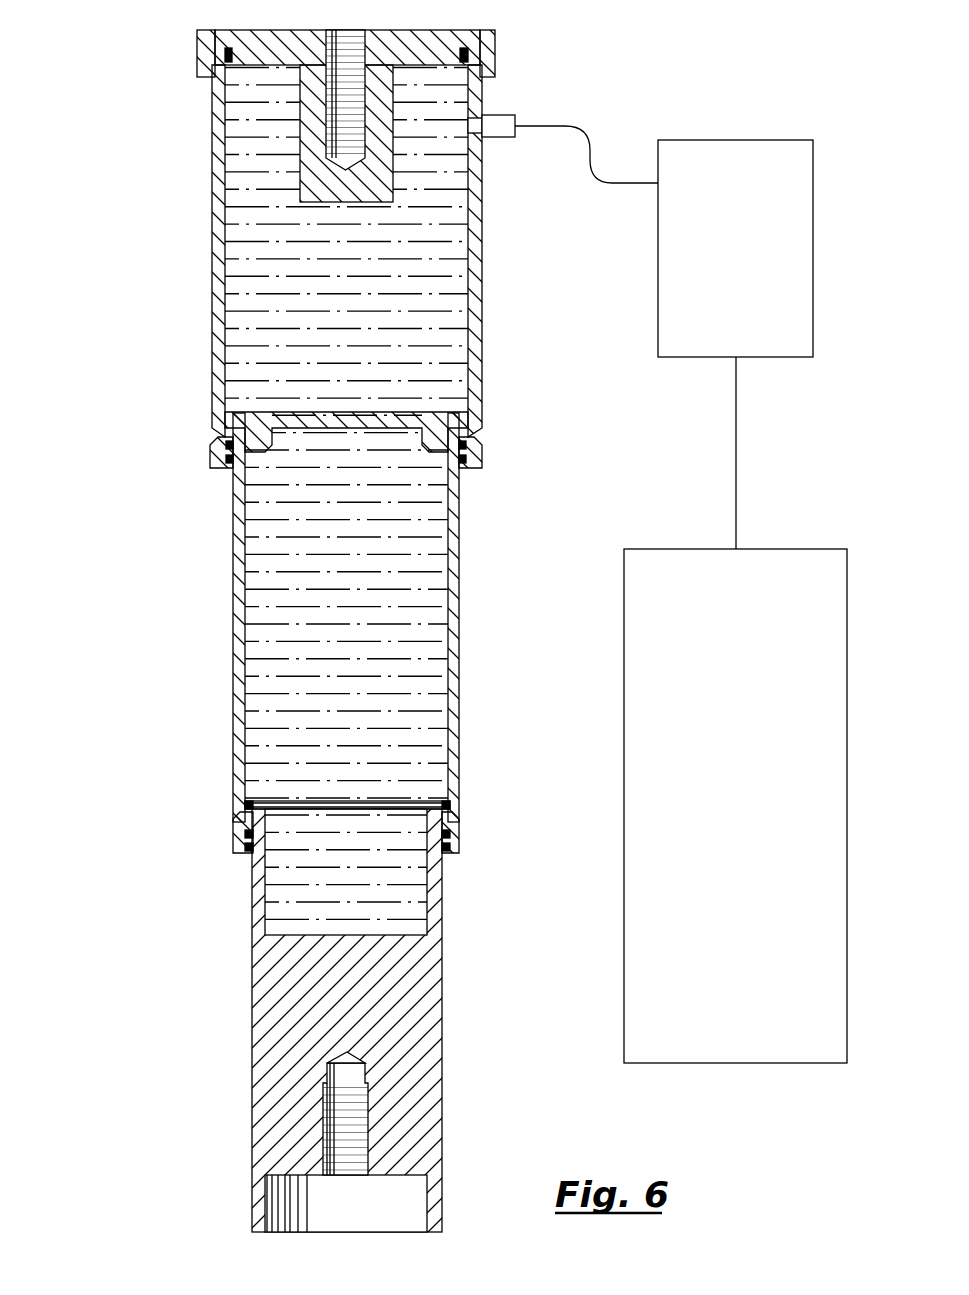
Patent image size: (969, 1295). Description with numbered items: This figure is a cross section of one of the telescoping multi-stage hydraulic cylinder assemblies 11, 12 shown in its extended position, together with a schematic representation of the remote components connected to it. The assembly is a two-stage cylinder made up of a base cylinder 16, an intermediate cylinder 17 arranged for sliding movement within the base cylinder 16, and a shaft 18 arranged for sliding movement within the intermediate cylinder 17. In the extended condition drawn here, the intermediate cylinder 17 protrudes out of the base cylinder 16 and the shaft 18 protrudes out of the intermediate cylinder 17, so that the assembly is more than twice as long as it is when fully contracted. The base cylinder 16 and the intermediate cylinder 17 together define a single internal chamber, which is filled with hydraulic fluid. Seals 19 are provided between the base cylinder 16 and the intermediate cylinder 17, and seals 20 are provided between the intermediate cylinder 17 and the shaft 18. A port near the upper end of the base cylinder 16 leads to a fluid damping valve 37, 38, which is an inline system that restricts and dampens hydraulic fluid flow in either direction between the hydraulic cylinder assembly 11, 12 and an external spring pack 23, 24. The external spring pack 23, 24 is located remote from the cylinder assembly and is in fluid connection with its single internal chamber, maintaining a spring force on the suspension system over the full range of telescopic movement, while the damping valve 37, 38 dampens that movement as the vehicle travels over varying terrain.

The hydraulic cylinder assembly 11 is at (303, 631).
The hydraulic cylinder assembly 12 is at (303, 631).
The base cylinder 16 is at (212, 338).
The intermediate cylinder 17 is at (238, 632).
The shaft 18 is at (267, 1018).
The seals 19 is at (466, 458).
The seals 20 is at (450, 846).
The external spring pack 23 is at (735, 769).
The external spring pack 24 is at (782, 562).
The fluid damping valve 37 is at (664, 210).
The fluid damping valve 38 is at (767, 148).